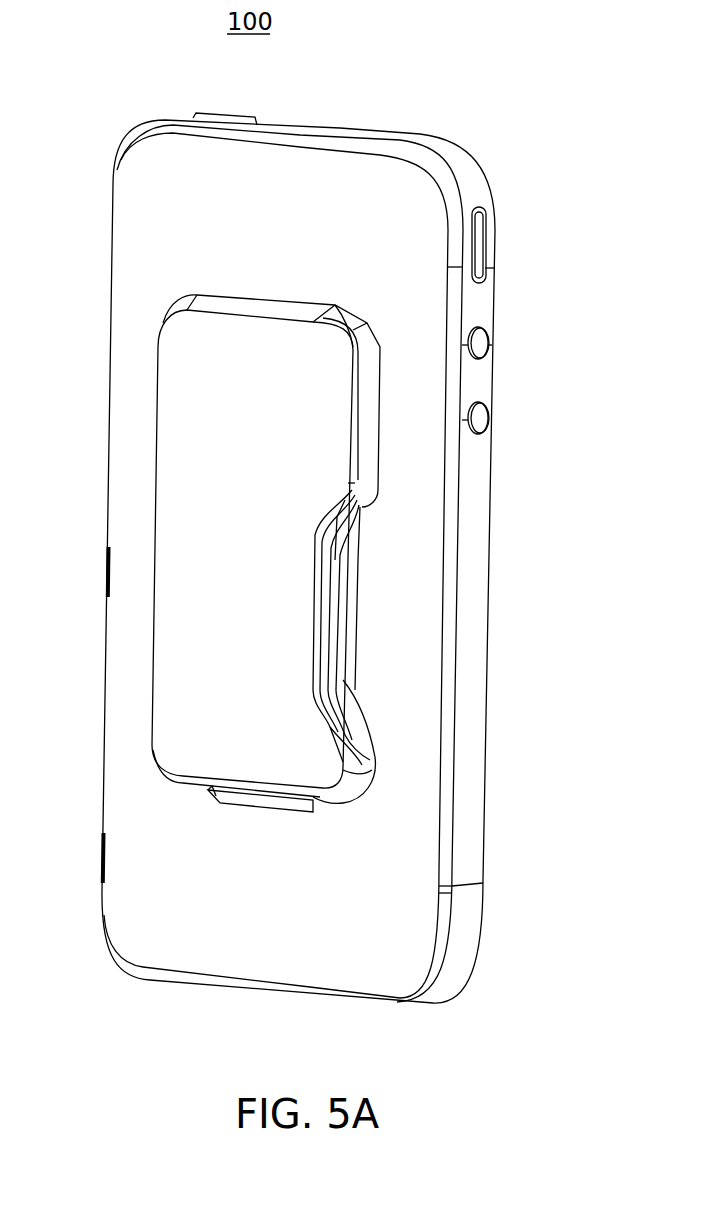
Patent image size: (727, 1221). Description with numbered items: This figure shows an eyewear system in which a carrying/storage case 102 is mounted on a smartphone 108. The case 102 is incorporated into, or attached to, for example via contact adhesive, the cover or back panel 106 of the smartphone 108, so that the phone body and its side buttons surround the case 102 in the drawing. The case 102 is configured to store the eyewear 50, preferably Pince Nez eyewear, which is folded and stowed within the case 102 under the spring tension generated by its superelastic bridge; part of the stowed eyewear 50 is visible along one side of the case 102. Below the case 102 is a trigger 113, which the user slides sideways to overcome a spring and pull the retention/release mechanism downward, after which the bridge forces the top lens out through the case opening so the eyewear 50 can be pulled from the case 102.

The carrying/storage case 102 is at (177, 547).
The cover or back panel 106 is at (128, 267).
The smartphone 108 is at (478, 305).
The eyewear 50 is at (327, 632).
The trigger 113 is at (237, 798).